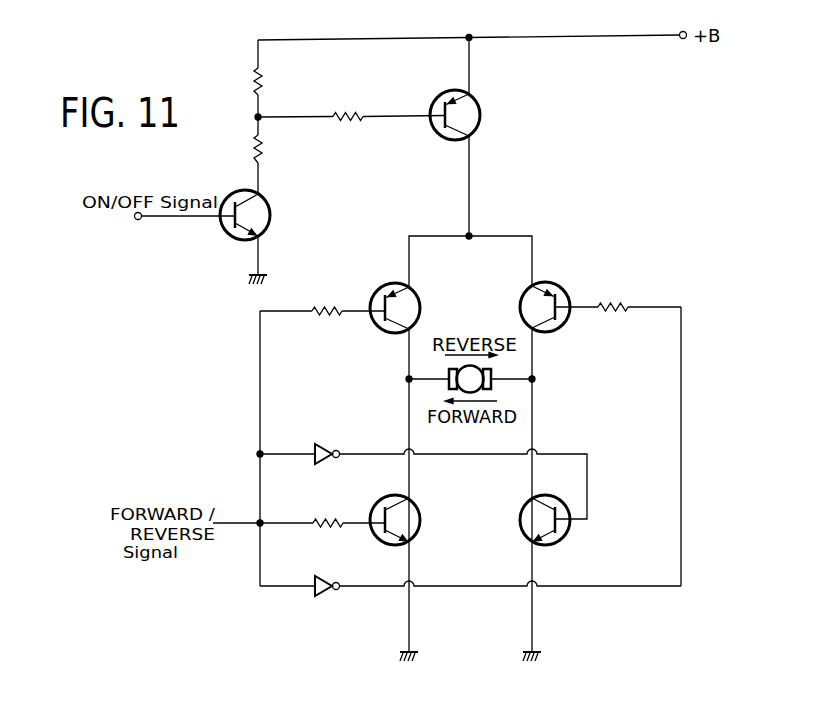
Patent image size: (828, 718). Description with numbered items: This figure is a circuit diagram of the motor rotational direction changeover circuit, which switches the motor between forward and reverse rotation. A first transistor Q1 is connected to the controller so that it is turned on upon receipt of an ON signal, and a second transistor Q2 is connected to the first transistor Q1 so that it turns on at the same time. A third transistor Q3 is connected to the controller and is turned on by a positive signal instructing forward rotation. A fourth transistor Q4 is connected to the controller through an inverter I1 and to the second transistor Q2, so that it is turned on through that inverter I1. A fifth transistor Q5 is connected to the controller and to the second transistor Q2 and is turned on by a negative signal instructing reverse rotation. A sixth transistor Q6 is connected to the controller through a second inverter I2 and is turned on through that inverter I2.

The first transistor Q1 is at (260, 215).
The second transistor Q2 is at (471, 115).
The third transistor Q3 is at (410, 520).
The fourth transistor Q4 is at (555, 297).
The fifth transistor Q5 is at (388, 297).
The sixth transistor Q6 is at (555, 530).
The inverter I1 is at (300, 574).
The second inverter I2 is at (300, 440).